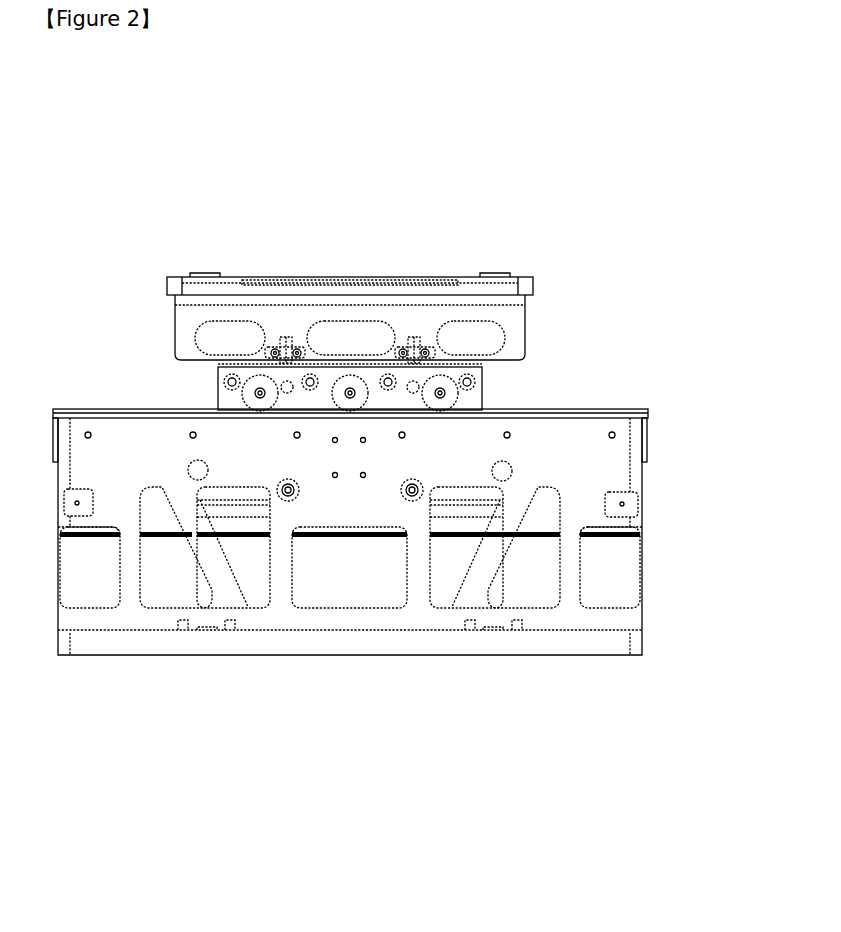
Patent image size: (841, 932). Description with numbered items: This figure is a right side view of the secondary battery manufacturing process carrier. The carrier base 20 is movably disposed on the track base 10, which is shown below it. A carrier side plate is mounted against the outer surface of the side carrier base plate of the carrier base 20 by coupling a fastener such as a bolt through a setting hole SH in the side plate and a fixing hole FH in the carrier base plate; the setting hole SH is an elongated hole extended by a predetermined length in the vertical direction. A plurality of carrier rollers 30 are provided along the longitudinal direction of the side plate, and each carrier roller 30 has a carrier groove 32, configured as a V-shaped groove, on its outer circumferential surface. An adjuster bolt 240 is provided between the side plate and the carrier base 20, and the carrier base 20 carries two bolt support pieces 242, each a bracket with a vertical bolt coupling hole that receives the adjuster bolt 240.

The track base 10 is at (662, 480).
The carrier base 20 is at (155, 307).
The carrier roller 30 is at (250, 398).
The carrier groove 32 is at (262, 413).
The adjuster bolt 240 is at (284, 315).
The bolt support piece 242 is at (303, 323).
The setting hole SH is at (388, 377).
The fixing hole FH is at (231, 374).